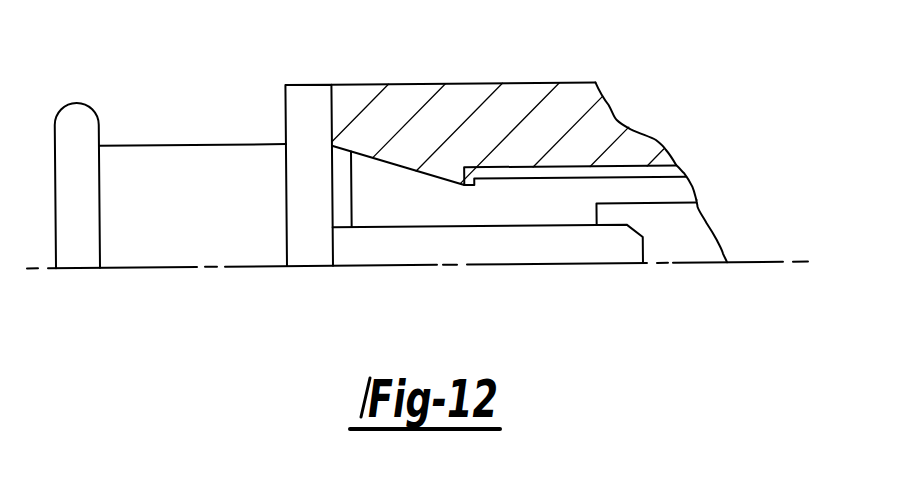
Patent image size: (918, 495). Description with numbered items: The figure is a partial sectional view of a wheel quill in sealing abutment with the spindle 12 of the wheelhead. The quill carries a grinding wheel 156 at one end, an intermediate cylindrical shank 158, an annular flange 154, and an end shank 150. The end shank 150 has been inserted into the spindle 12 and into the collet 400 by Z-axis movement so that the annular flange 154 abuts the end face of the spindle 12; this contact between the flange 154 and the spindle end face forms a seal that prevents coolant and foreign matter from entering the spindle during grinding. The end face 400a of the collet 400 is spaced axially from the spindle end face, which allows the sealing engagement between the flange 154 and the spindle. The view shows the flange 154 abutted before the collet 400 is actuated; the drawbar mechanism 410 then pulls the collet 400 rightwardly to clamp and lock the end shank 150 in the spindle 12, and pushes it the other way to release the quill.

The spindle 12 is at (448, 97).
The end shank 150 is at (547, 249).
The annular flange 154 is at (312, 100).
The grinding wheel 156 is at (90, 101).
The intermediate cylindrical shank 158 is at (202, 147).
The collet 400 is at (682, 195).
The end face of the collet 400a is at (352, 197).
The drawbar mechanism 410 is at (703, 241).